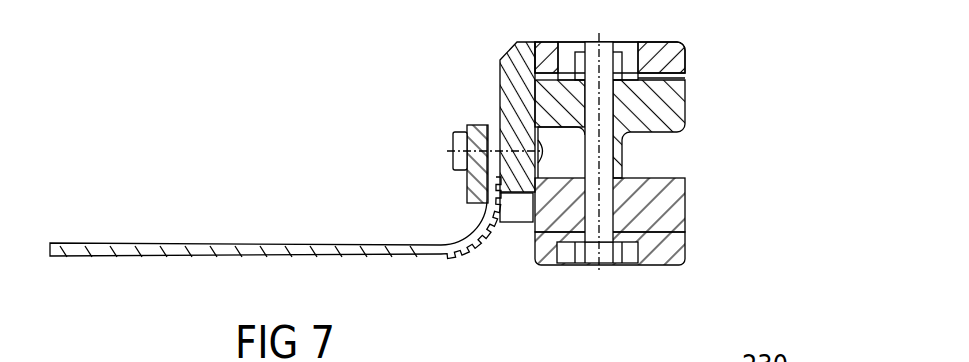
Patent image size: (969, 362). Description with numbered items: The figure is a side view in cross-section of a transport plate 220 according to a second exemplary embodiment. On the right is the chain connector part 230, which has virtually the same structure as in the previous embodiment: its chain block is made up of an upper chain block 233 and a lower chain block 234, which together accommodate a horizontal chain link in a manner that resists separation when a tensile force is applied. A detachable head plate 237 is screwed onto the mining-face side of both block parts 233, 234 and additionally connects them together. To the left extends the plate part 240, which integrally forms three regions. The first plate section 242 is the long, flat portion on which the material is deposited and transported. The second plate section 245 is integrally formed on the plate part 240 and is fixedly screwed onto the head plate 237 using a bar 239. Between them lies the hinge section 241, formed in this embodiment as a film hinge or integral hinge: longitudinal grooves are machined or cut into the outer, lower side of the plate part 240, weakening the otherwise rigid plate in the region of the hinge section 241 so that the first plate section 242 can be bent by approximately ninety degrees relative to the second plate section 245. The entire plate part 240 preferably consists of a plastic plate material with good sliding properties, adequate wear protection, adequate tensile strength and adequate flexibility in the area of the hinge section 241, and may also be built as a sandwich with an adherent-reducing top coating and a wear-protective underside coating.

The transport plate 220 is at (596, 295).
The chain connector part 230 is at (705, 52).
The upper chain block 233 is at (655, 102).
The lower chain block 234 is at (645, 212).
The head plate 237 is at (500, 83).
The bar 239 is at (486, 178).
The plate part 240 is at (191, 212).
The hinge section 241 is at (479, 261).
The first plate section 242 is at (300, 250).
The second plate section 245 is at (497, 147).